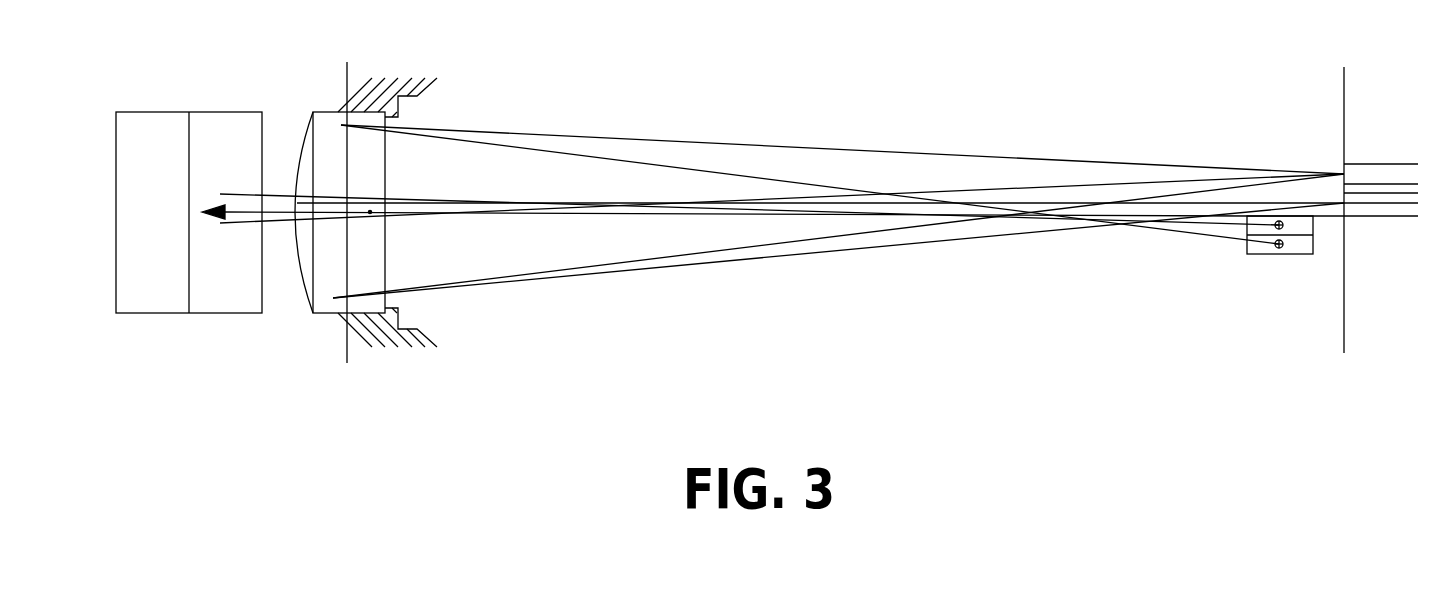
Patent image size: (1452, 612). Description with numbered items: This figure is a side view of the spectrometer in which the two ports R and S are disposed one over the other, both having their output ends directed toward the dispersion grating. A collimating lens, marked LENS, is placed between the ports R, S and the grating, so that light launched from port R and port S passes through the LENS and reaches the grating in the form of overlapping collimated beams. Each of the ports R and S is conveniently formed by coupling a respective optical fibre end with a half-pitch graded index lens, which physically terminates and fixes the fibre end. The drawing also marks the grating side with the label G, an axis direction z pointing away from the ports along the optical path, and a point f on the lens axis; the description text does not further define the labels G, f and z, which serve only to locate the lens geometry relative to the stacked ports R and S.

The target grid G is at (189, 194).
The collimating lens LENS is at (366, 196).
The focal point f is at (398, 250).
The optical axis direction z is at (724, 232).
The port R is at (1394, 177).
The port S is at (1345, 207).